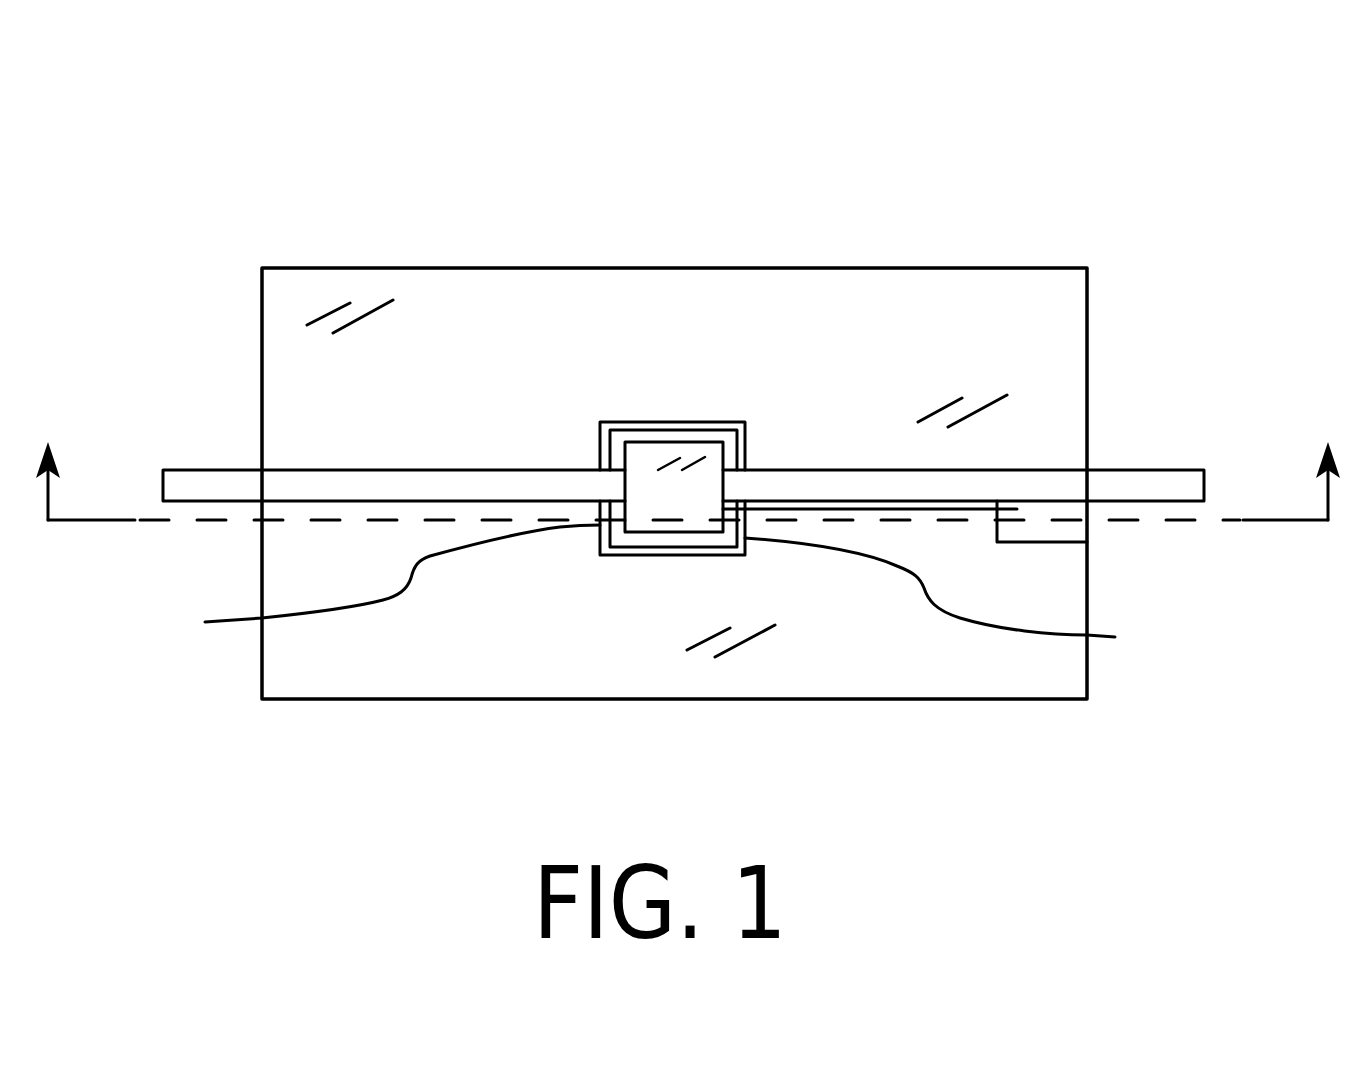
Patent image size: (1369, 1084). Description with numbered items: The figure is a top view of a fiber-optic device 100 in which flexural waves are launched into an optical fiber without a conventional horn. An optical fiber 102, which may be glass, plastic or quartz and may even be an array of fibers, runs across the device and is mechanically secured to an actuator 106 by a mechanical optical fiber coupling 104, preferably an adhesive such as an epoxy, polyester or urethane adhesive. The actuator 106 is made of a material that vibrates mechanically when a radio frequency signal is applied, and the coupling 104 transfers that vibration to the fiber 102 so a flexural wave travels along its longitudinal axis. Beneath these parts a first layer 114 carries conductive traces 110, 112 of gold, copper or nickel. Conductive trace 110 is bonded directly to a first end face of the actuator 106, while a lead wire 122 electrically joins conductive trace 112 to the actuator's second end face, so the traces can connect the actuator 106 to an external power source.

The fiber-optic device 100 is at (698, 385).
The optical fiber 102 is at (1135, 472).
The mechanical optical fiber coupling 104 is at (366, 584).
The actuator 106 is at (965, 598).
The conductive trace 110 is at (683, 422).
The conductive trace 112 is at (1087, 540).
The first layer 114 is at (762, 268).
The lead wire 122 is at (957, 510).